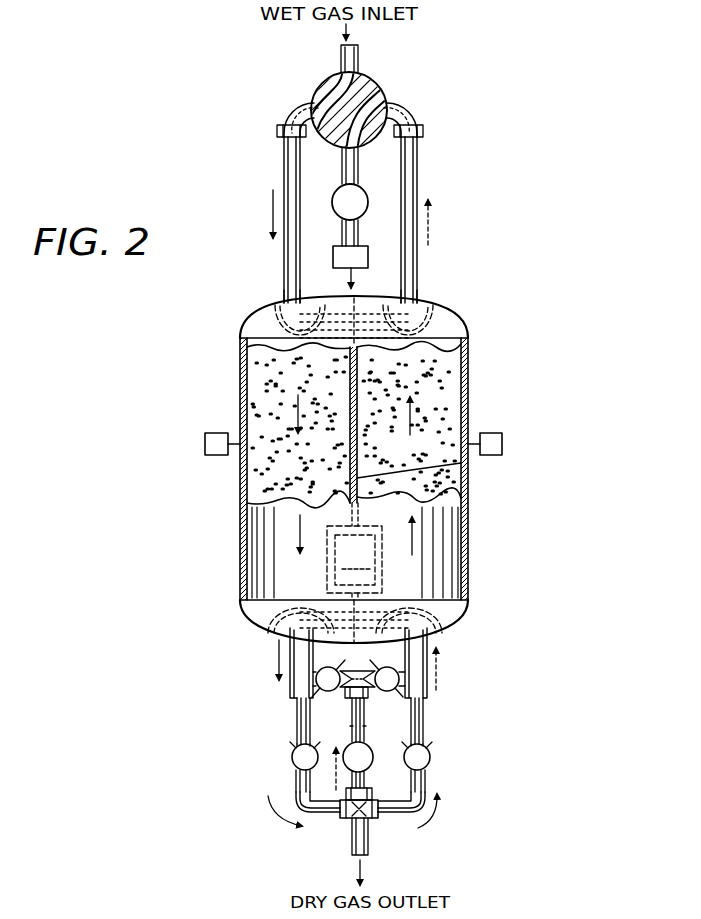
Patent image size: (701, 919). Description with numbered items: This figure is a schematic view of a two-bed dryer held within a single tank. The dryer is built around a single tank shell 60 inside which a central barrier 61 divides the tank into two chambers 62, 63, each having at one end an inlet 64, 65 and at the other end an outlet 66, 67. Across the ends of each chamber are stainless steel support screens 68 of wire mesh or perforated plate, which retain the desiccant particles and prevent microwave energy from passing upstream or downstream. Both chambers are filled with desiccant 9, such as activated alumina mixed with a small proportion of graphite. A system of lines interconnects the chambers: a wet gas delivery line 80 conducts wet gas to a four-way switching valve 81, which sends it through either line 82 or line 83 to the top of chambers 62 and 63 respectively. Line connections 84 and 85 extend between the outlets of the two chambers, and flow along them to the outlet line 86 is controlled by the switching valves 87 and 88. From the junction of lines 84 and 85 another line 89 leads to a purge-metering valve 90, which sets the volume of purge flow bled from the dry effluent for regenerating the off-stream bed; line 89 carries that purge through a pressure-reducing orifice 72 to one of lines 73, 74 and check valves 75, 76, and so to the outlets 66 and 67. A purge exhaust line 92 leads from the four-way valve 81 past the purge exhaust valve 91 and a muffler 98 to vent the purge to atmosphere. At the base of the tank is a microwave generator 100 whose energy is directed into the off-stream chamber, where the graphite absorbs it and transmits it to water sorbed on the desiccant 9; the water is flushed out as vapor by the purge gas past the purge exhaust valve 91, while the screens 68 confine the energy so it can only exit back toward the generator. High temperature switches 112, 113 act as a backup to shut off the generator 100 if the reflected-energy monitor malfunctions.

The desiccant 9 is at (353, 469).
The tank shell 60 is at (470, 366).
The central barrier 61 is at (461, 463).
The first chamber 62 is at (238, 522).
The second chamber 63 is at (472, 522).
The inlet of first chamber 64 is at (287, 302).
The inlet of second chamber 65 is at (414, 302).
The outlet of first chamber 66 is at (290, 640).
The outlet of second chamber 67 is at (412, 640).
The support screens 68 is at (276, 314).
The pressure-reducing orifice 72 is at (373, 745).
The purge line to first chamber 73 is at (316, 682).
The purge line to second chamber 74 is at (399, 682).
The check valve in first purge line 75 is at (307, 716).
The check valve in second purge line 76 is at (414, 720).
The wet gas delivery line 80 is at (356, 58).
The four-way switching valve 81 is at (386, 94).
The line to first chamber 82 is at (284, 172).
The line to second chamber 83 is at (418, 172).
The outlet line connection of first chamber 84 is at (292, 797).
The outlet line connection of second chamber 85 is at (424, 736).
The outlet line 86 is at (369, 838).
The switching valve 87 is at (292, 758).
The switching valve 88 is at (426, 766).
The purge line 89 is at (350, 822).
The purge-metering valve 90 is at (346, 762).
The purge exhaust valve 91 is at (368, 197).
The purge exhaust line 92 is at (346, 236).
The muffler 98 is at (368, 256).
The microwave generator 100 is at (382, 557).
The high temperature switch 112 is at (215, 433).
The high temperature switch 113 is at (491, 433).